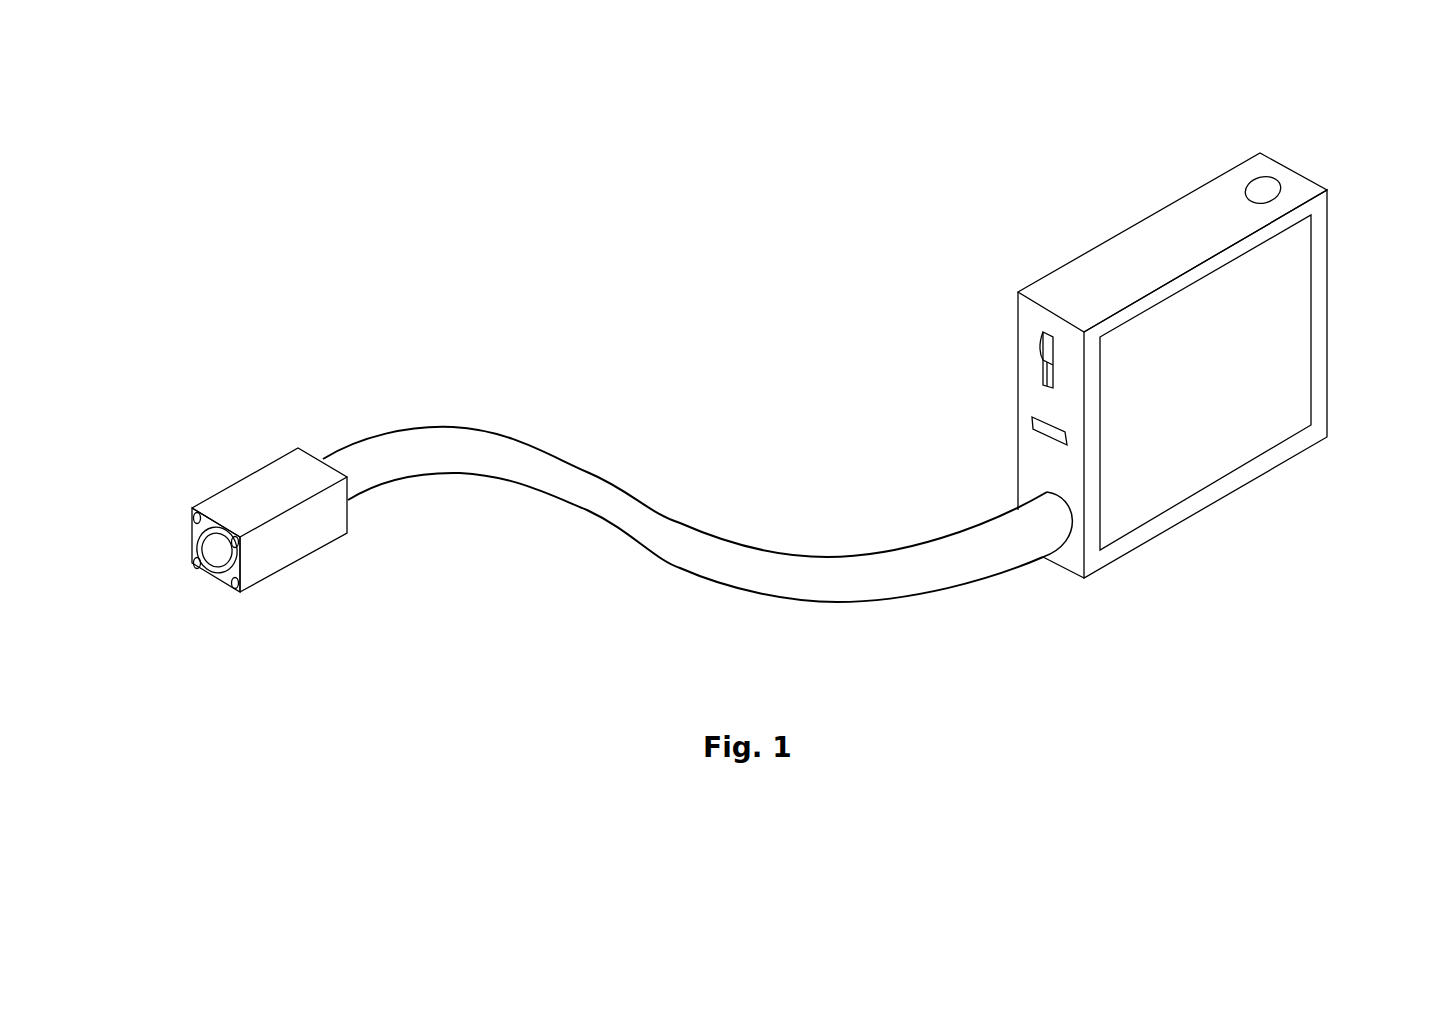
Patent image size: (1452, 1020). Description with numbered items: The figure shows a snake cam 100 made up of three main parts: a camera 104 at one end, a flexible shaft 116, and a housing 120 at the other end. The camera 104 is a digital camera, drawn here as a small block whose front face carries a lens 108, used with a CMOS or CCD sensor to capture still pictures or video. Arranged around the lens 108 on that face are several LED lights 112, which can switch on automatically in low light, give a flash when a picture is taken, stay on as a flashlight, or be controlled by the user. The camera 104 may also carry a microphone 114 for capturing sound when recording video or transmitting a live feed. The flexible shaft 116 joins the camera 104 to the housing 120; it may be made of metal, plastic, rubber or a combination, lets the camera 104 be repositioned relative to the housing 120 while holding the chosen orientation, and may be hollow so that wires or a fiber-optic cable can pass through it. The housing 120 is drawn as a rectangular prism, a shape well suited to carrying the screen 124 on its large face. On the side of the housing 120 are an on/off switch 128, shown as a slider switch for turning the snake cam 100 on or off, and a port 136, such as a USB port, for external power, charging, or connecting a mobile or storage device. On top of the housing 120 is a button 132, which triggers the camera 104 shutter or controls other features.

The snake cam 100 is at (769, 170).
The camera 104 is at (325, 542).
The lens 108 is at (212, 545).
The LED lights 112 is at (197, 564).
The microphone 114 is at (192, 509).
The flexible shaft 116 is at (680, 521).
The housing 120 is at (1290, 168).
The screen 124 is at (1292, 340).
The on/off switch 128 is at (1043, 342).
The button 132 is at (1247, 190).
The port 136 is at (1037, 425).